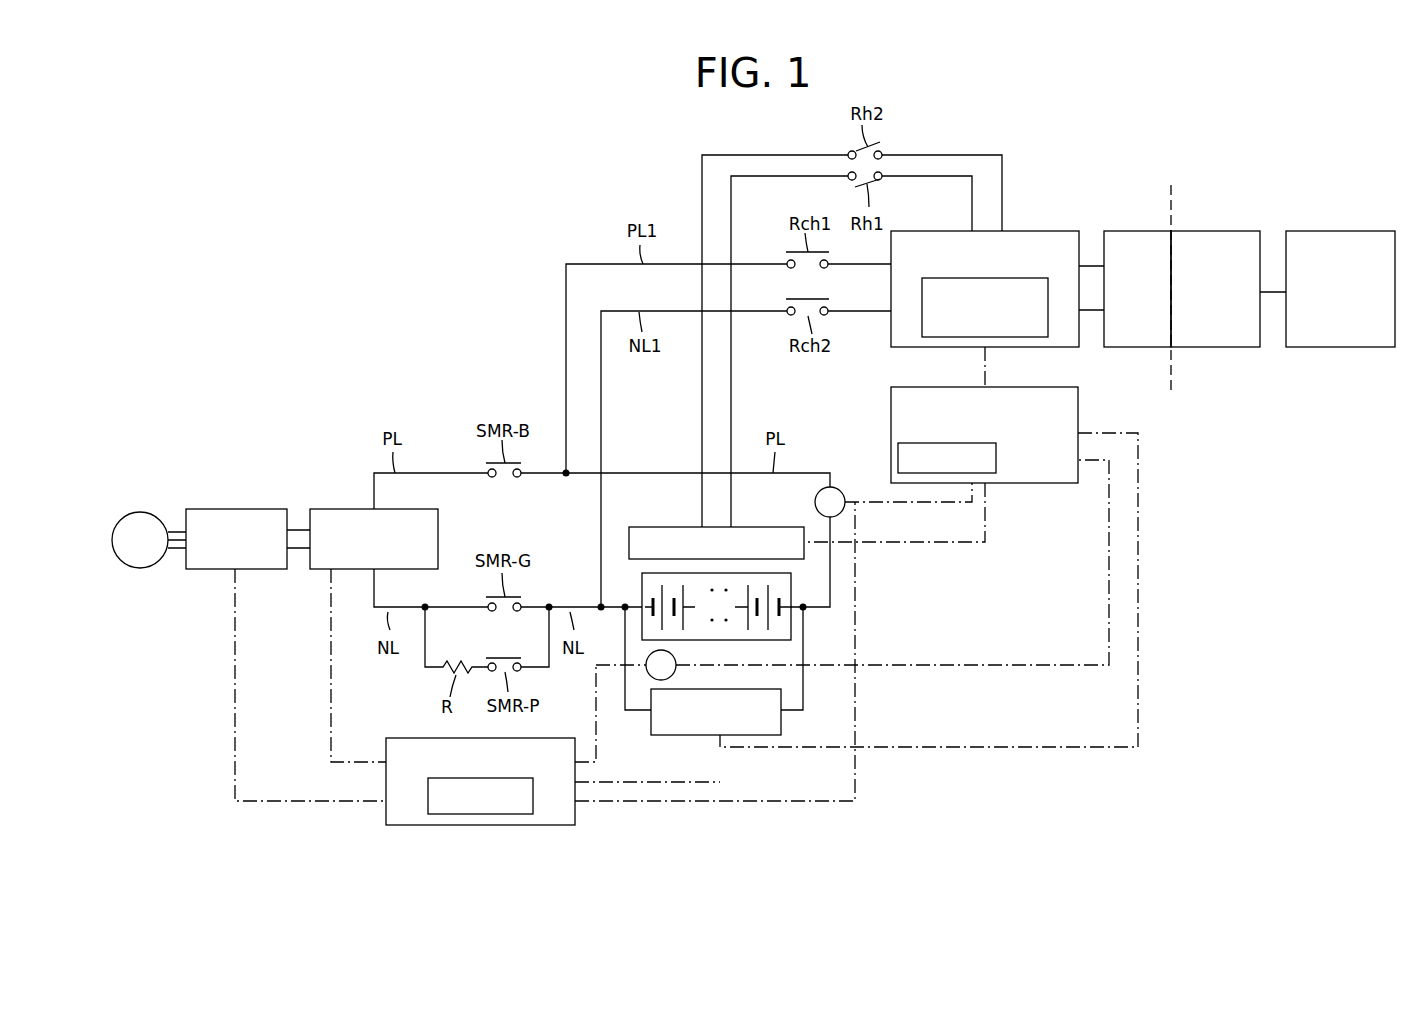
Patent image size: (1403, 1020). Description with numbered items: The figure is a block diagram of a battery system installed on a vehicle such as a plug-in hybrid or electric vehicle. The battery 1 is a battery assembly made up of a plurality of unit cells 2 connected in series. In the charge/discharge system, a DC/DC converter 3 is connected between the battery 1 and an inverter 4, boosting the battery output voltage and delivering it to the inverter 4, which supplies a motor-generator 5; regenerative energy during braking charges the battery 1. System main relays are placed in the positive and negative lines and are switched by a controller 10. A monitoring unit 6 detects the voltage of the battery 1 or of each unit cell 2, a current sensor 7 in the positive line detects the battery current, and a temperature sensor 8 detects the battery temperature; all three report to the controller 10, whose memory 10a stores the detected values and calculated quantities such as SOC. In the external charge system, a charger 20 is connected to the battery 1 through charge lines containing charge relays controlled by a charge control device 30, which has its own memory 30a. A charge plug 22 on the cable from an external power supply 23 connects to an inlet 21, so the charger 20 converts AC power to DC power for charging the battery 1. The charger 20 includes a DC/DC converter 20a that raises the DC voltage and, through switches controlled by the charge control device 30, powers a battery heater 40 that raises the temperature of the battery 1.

The battery 1 is at (716, 601).
The unit cell 2 is at (791, 590).
The DC/DC converter 3 is at (325, 509).
The inverter 4 is at (240, 509).
The motor-generator 5 is at (145, 511).
The monitoring unit 6 is at (781, 720).
The current sensor 7 is at (845, 497).
The temperature sensor 8 is at (676, 662).
The controller 10 is at (480, 806).
The memory 10a is at (502, 814).
The charger 20 is at (985, 286).
The DC/DC converter 20a is at (1043, 337).
The inlet 21 is at (1136, 231).
The charge plug 22 is at (1217, 231).
The external power supply 23 is at (1359, 231).
The charge control device 30 is at (952, 435).
The memory 30a is at (898, 455).
The battery heater 40 is at (656, 527).